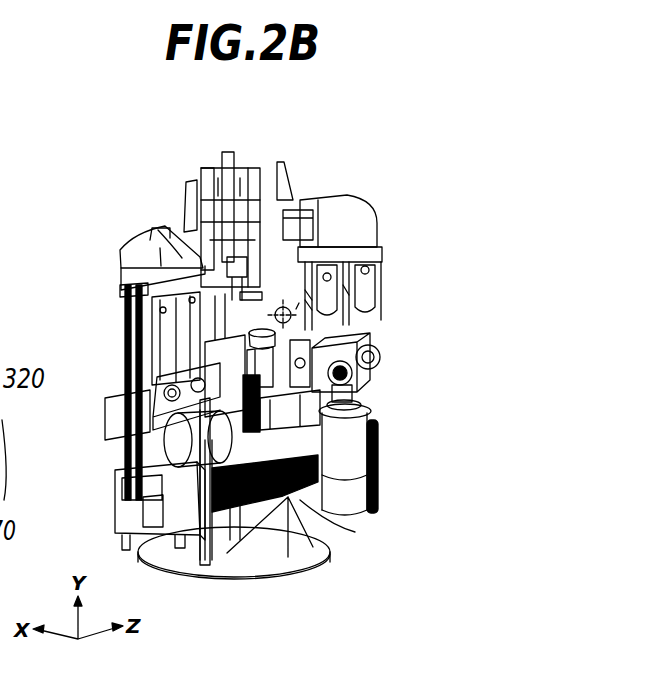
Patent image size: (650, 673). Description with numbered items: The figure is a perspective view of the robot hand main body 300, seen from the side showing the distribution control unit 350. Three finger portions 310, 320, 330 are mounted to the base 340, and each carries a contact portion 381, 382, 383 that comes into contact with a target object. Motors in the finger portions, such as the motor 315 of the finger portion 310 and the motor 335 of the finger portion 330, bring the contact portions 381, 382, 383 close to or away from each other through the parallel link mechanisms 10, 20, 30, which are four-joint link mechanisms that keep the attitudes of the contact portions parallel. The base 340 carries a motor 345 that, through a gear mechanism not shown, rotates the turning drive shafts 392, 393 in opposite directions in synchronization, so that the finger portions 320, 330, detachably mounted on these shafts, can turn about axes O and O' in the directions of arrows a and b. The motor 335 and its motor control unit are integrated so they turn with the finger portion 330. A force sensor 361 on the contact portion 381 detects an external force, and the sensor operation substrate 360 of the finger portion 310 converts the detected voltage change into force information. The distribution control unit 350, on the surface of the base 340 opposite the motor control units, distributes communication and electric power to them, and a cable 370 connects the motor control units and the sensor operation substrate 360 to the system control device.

The robot hand main body 300 is at (110, 113).
The finger portion 310 is at (60, 170).
The finger portion 320 is at (270, 116).
The finger portion 330 is at (433, 163).
The parallel link mechanism 10 is at (122, 347).
The parallel link mechanism 20 is at (328, 203).
The parallel link mechanism 30 is at (376, 318).
The motor 315 is at (120, 432).
The motor 335 is at (360, 426).
The base 340 is at (248, 553).
The motor 345 is at (305, 510).
The distribution control unit 350 is at (180, 477).
The sensor operation substrate 360 is at (130, 518).
The force sensor 361 is at (147, 270).
The cable 370 is at (128, 317).
The contact portion 381 is at (186, 212).
The contact portion 382 is at (228, 152).
The contact portion 383 is at (288, 188).
The turning drive shaft 392 is at (357, 290).
The turning drive shaft 393 is at (156, 232).